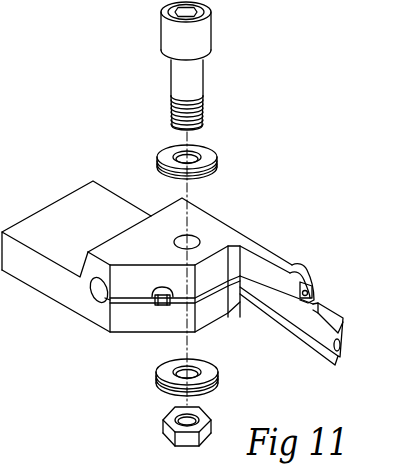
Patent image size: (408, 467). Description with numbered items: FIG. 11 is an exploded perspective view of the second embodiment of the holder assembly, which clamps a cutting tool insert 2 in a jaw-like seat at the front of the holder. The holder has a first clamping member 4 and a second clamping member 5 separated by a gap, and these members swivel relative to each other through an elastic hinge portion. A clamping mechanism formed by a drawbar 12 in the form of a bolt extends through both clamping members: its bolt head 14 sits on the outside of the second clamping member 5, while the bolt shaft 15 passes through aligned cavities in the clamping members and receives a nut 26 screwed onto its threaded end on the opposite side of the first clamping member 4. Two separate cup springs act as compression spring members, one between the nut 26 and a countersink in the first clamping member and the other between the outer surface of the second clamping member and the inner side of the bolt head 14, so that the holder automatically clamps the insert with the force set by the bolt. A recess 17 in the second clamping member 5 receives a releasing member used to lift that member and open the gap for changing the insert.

The cutting tool insert 2 is at (0, 114).
The first clamping member 4 is at (133, 327).
The second clamping member 5 is at (222, 232).
The drawbar 12 is at (150, 78).
The bolt head 14 is at (204, 34).
The bolt shaft 15 is at (201, 78).
The recess 17 is at (170, 293).
The nut 26 is at (166, 430).